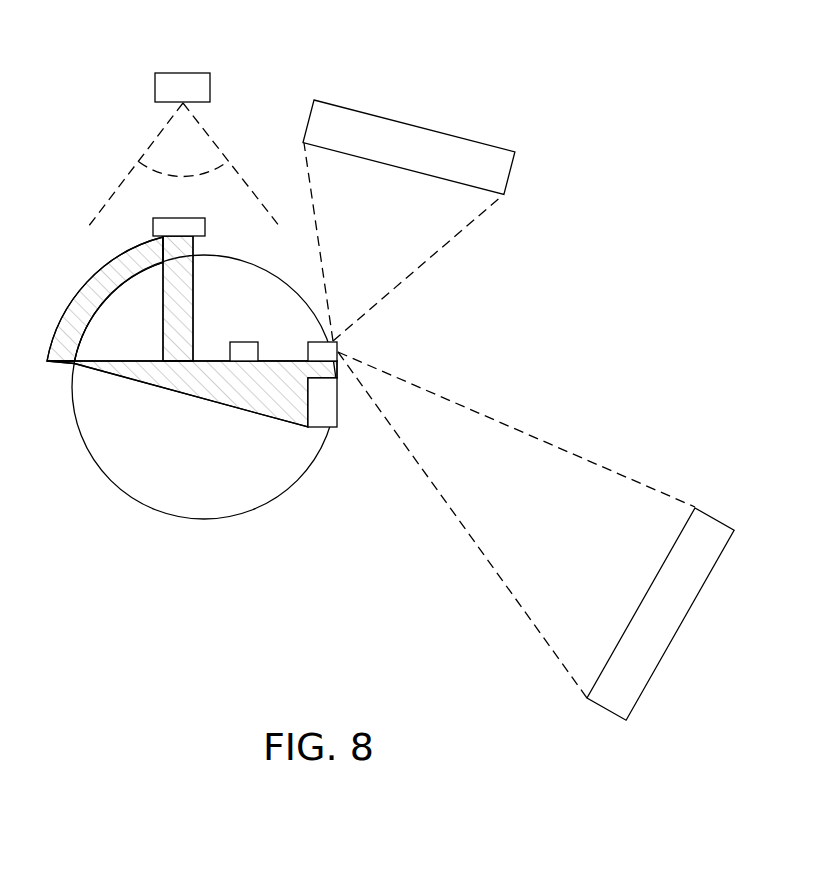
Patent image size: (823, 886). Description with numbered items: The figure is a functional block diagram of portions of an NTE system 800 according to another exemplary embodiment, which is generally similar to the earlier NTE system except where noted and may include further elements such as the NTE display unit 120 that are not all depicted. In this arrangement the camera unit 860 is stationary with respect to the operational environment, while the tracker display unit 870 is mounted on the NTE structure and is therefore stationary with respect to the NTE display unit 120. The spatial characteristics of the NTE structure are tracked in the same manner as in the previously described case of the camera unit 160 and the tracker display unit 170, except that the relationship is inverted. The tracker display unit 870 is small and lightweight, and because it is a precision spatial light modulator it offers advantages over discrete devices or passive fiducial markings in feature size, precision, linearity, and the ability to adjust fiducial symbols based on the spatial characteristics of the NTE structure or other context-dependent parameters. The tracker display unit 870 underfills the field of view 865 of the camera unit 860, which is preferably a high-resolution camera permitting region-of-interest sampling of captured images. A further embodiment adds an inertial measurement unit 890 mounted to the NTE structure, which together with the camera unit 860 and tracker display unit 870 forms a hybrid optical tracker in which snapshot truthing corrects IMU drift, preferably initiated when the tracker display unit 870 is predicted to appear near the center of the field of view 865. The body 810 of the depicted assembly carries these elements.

The NTE system 800 is at (635, 61).
The housing body 810 is at (252, 402).
The camera unit 860 is at (185, 73).
The field of view 865 is at (150, 170).
The tracker display unit 870 is at (207, 232).
The inertial measurement unit 890 is at (247, 341).
The camera unit 160 is at (338, 350).
The NTE display unit 120 is at (325, 428).
The tracker display unit 170 is at (417, 125).